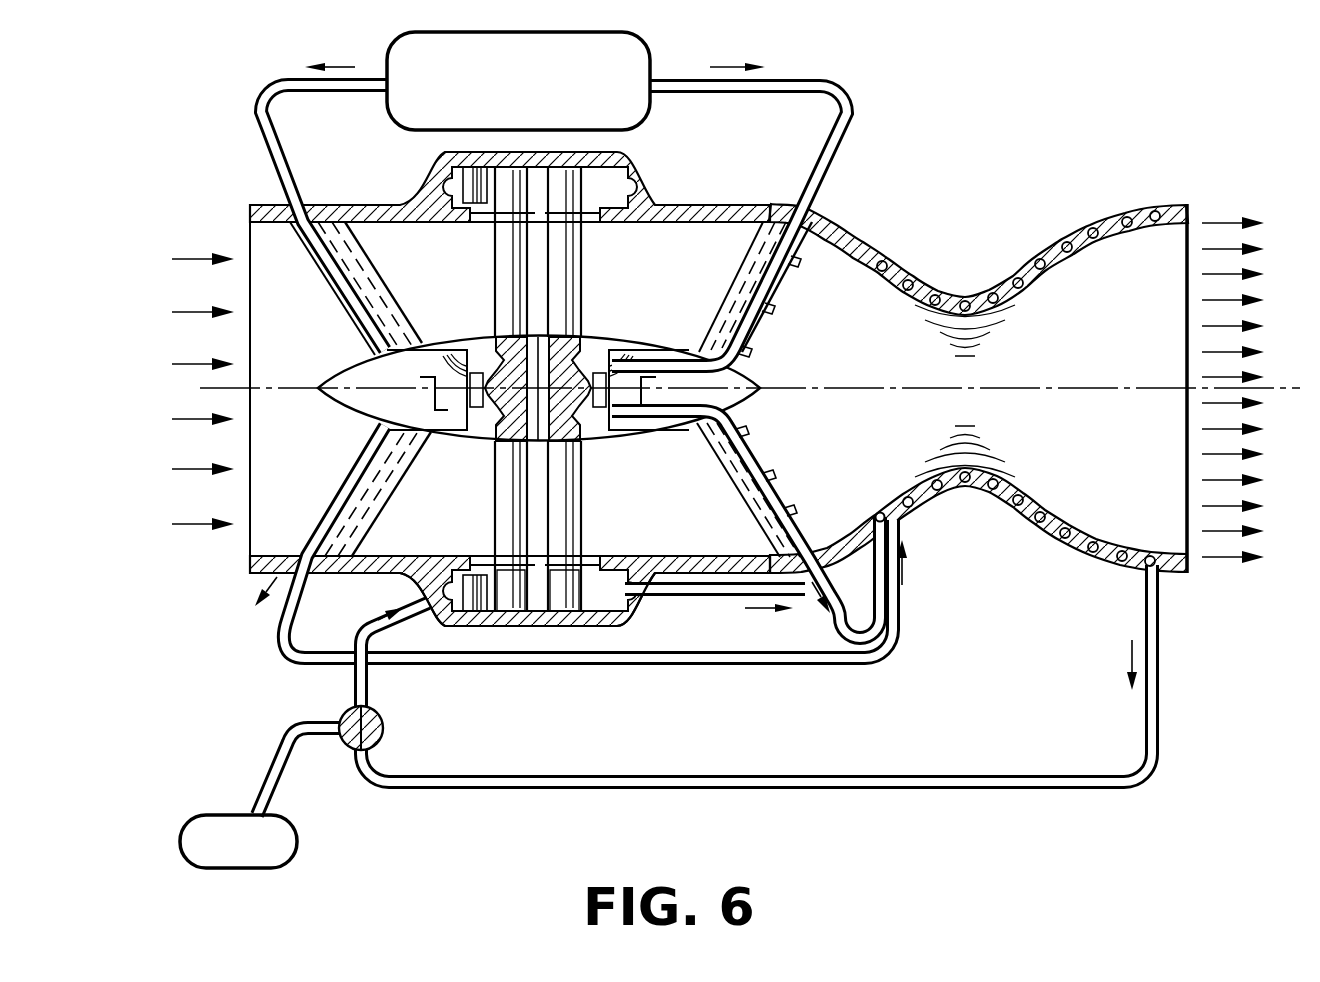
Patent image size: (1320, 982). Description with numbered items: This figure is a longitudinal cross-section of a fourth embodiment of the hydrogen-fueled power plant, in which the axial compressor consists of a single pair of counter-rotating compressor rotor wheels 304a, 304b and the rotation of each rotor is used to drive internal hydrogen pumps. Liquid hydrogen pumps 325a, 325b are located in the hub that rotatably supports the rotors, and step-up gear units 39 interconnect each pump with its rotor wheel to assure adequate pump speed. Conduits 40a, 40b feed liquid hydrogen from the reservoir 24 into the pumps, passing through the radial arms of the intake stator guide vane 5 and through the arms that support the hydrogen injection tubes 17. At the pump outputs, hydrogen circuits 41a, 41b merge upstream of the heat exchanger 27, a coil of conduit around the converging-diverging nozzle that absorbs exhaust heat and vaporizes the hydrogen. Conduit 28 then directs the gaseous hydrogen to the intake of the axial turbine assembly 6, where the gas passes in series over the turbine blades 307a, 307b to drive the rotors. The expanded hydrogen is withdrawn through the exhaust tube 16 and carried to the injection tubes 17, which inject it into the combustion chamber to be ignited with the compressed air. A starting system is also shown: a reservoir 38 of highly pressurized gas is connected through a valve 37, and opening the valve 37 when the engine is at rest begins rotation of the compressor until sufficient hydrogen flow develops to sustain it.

The stator guide vane 5 is at (322, 280).
The axial turbine assembly 6 is at (533, 640).
The exhaust tube 16 is at (672, 597).
The injection tubes 17 is at (790, 287).
The reservoir 24 is at (533, 86).
The heat exchanger 27 is at (995, 489).
The conduit 28 is at (893, 777).
The valve 37 is at (383, 736).
The reservoir of highly pressurized gas 38 is at (220, 856).
The step-up gear units 39 is at (476, 340).
The conduit 40a is at (264, 147).
The conduit 40b is at (828, 177).
The hydrogen circuit 41a is at (795, 665).
The hydrogen circuit 41b is at (815, 610).
The compressor rotor wheel 304a is at (504, 507).
The compressor rotor wheel 304b is at (572, 522).
The turbine blade 307a is at (508, 587).
The turbine blade 307b is at (563, 587).
The liquid hydrogen pump 325a is at (447, 400).
The liquid hydrogen pump 325b is at (610, 400).